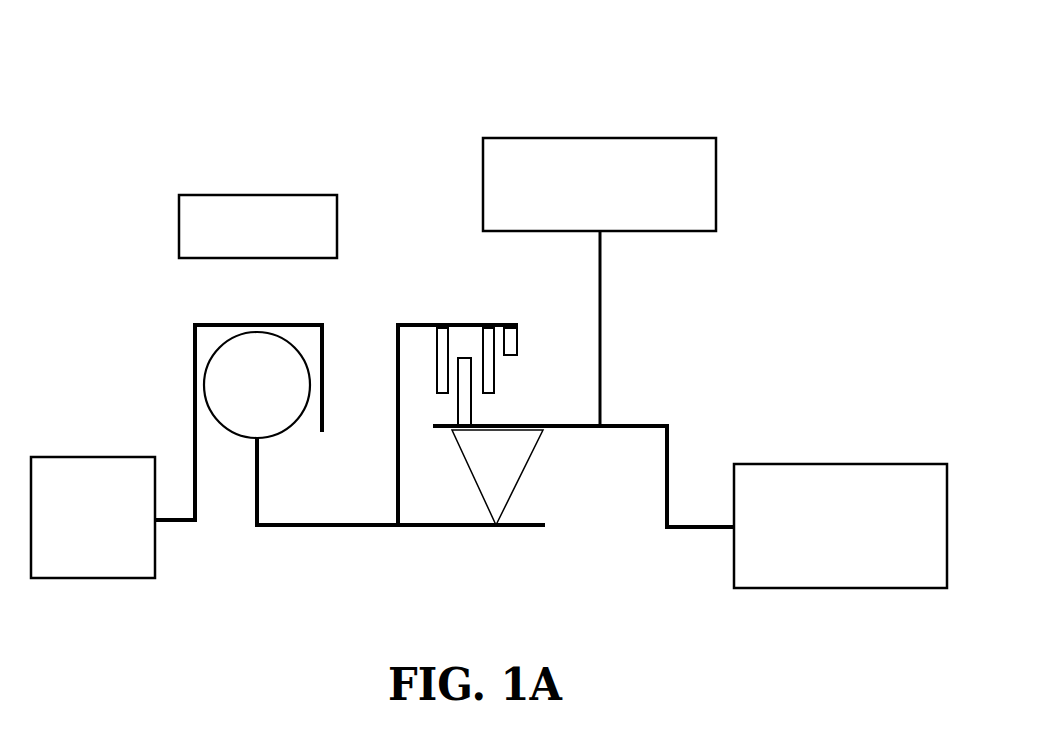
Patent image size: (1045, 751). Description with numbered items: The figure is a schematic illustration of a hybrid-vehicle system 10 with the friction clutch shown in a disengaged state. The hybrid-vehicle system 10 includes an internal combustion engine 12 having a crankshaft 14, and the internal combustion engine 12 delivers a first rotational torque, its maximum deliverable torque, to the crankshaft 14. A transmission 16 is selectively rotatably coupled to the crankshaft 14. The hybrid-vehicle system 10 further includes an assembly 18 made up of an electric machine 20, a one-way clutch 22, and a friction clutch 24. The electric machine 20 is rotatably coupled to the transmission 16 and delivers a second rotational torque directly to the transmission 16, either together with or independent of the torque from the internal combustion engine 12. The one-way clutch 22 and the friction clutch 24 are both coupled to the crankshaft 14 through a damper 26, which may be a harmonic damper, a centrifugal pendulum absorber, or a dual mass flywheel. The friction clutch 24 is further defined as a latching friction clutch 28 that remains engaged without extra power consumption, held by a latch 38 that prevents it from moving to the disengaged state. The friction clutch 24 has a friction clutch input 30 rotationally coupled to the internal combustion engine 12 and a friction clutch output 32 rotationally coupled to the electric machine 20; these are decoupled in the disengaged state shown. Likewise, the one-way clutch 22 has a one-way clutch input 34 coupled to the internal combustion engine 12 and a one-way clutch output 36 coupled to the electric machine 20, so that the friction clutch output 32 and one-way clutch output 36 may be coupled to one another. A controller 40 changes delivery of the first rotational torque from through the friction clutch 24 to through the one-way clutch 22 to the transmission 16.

The hybrid-vehicle system 10 is at (145, 82).
The internal combustion engine 12 is at (88, 482).
The crankshaft 14 is at (172, 527).
The transmission 16 is at (806, 484).
The assembly 18 is at (465, 114).
The electric machine 20 is at (638, 152).
The one-way clutch 22 is at (511, 467).
The friction clutch 24 is at (441, 330).
The damper 26 is at (220, 374).
The latching friction clutch 28 is at (465, 358).
The friction clutch input 30 is at (396, 412).
The friction clutch output 32 is at (487, 422).
The one-way clutch input 34 is at (456, 528).
The one-way clutch output 36 is at (532, 424).
The latch 38 is at (521, 337).
The controller 40 is at (192, 232).